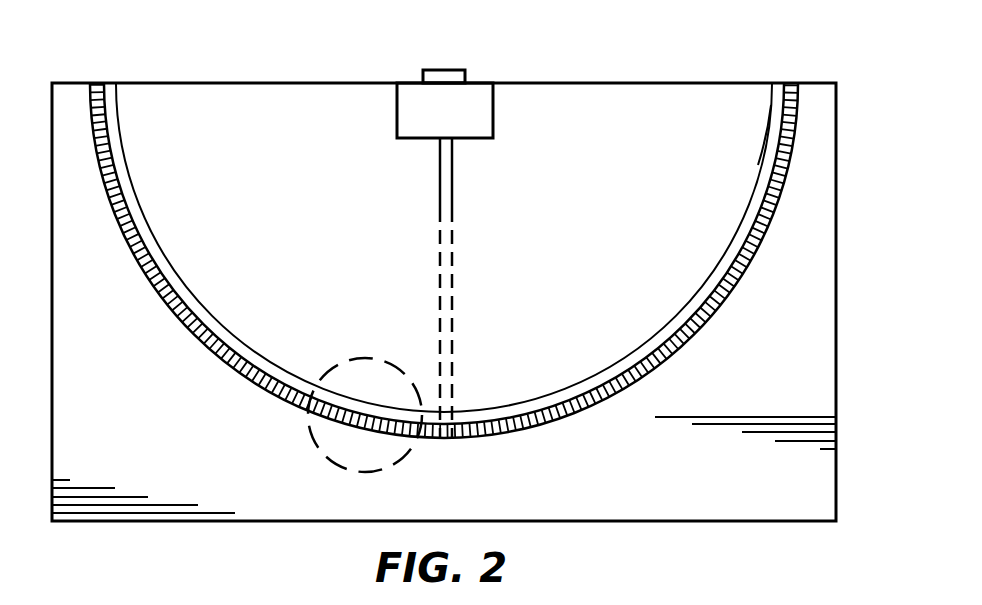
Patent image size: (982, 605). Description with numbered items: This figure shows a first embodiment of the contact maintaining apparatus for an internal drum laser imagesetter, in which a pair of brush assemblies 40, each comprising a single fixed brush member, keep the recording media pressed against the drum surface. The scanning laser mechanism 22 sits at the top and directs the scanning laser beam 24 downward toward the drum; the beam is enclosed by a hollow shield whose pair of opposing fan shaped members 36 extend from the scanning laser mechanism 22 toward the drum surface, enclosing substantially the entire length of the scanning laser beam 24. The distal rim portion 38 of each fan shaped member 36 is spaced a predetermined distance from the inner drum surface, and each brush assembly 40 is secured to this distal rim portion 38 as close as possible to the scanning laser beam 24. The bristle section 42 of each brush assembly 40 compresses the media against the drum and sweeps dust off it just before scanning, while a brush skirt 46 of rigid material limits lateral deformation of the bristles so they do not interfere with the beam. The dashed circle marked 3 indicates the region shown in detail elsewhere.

The brush assembly 40 is at (476, 224).
The fan shaped member 36 is at (610, 133).
The distal rim portion 38 is at (771, 105).
The brush skirt 46 is at (147, 223).
The bristle section 42 is at (181, 322).
The scanning laser mechanism 22 is at (445, 104).
The scanning laser beam 24 is at (450, 230).
The detail view circle 3 is at (367, 362).